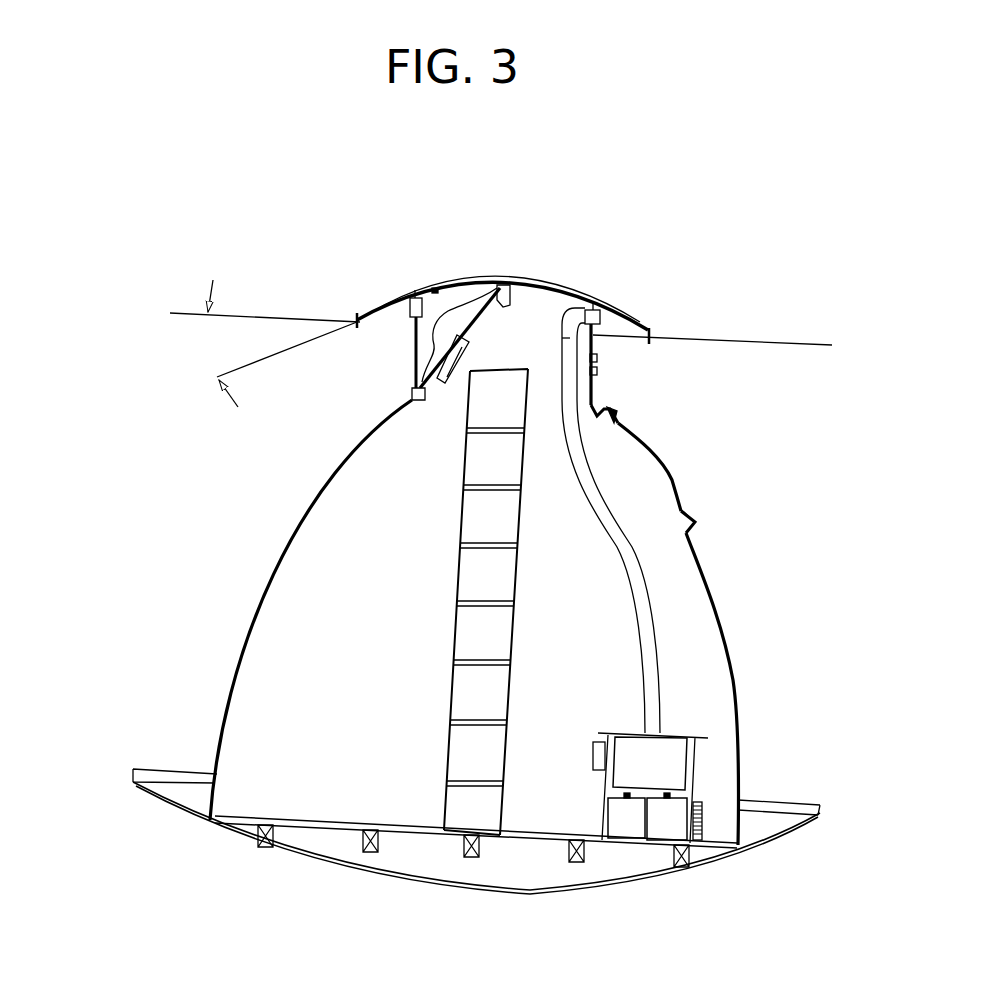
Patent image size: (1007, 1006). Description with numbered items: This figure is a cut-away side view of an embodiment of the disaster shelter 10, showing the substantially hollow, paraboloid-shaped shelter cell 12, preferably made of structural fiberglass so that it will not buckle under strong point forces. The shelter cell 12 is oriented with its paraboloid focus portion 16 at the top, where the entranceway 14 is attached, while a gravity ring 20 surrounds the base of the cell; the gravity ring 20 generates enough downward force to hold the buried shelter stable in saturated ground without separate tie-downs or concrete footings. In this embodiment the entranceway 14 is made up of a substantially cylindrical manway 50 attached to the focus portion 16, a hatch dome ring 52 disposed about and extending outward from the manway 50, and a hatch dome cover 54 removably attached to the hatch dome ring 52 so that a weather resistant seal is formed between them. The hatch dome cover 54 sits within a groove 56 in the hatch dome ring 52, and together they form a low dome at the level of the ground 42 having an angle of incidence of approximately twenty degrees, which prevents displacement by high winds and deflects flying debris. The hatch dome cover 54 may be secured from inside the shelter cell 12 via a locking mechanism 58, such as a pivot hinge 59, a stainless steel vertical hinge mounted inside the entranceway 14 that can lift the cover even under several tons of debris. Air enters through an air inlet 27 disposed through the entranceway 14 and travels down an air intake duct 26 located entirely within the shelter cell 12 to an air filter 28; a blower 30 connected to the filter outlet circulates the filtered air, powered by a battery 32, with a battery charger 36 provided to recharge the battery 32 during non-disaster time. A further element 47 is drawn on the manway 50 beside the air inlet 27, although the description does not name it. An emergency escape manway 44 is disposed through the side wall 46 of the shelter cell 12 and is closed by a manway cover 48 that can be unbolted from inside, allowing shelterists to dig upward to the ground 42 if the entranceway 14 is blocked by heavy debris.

The disaster shelter 10 is at (112, 395).
The shelter cell 12 is at (183, 550).
The entranceway 14 is at (378, 352).
The paraboloid focus portion 16 is at (308, 497).
The gravity ring 20 is at (783, 822).
The air intake duct 26 is at (658, 680).
The air inlet 27 is at (602, 322).
The air filter 28 is at (687, 753).
The blower 30 is at (703, 807).
The battery 32 is at (682, 802).
The battery charger 36 is at (597, 770).
The ground 42 is at (793, 348).
The emergency escape manway 44 is at (698, 529).
The side wall 46 is at (712, 587).
The mast support post 47 is at (597, 358).
The manway cover 48 is at (667, 462).
The manway 50 is at (593, 388).
The hatch dome ring 52 is at (627, 314).
The hatch dome cover 54 is at (540, 285).
The groove 56 is at (573, 293).
The locking mechanism 58 is at (443, 400).
The pivot hinge 59 is at (411, 374).